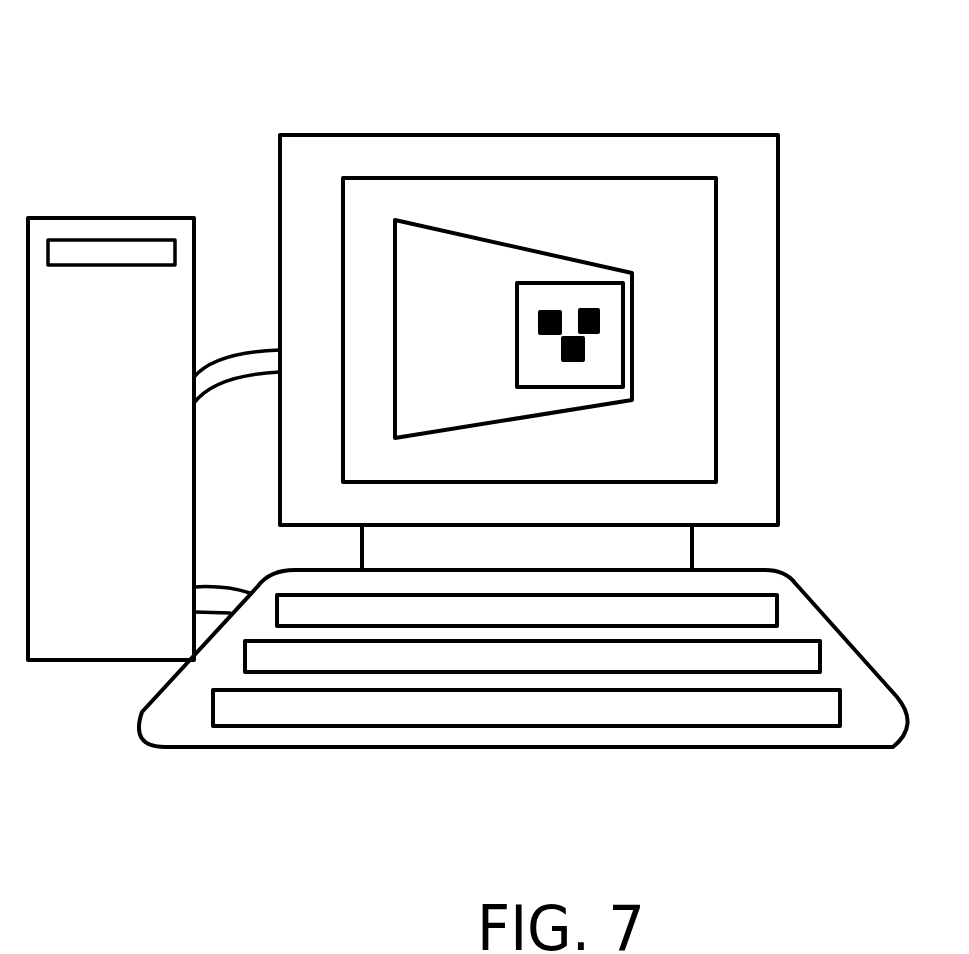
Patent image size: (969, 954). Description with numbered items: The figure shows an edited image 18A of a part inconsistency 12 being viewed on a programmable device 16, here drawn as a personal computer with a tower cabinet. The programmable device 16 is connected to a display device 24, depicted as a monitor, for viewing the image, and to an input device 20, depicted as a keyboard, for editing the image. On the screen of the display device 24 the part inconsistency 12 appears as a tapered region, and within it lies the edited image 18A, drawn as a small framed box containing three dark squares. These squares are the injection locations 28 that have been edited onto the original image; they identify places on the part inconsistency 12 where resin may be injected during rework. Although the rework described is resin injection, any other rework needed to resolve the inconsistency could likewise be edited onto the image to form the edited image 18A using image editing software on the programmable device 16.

The part inconsistency 12 is at (500, 240).
The programmable device 16 is at (113, 217).
The edited image 18A is at (635, 340).
The input device 20 is at (828, 622).
The display device 24 is at (617, 133).
The injection locations 28 is at (592, 310).